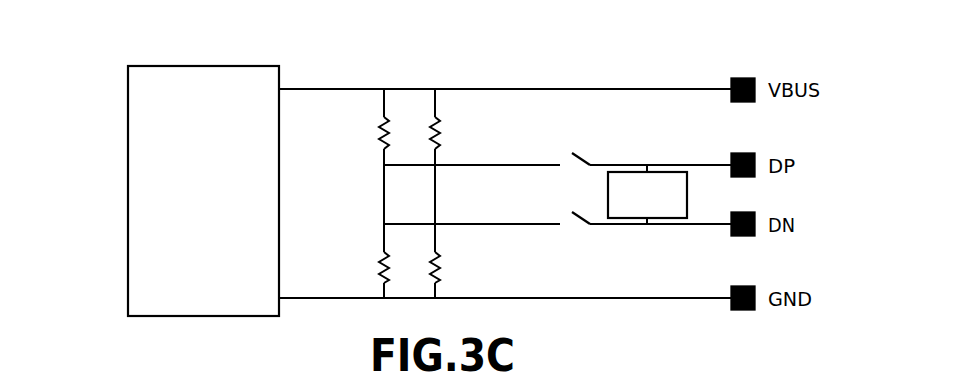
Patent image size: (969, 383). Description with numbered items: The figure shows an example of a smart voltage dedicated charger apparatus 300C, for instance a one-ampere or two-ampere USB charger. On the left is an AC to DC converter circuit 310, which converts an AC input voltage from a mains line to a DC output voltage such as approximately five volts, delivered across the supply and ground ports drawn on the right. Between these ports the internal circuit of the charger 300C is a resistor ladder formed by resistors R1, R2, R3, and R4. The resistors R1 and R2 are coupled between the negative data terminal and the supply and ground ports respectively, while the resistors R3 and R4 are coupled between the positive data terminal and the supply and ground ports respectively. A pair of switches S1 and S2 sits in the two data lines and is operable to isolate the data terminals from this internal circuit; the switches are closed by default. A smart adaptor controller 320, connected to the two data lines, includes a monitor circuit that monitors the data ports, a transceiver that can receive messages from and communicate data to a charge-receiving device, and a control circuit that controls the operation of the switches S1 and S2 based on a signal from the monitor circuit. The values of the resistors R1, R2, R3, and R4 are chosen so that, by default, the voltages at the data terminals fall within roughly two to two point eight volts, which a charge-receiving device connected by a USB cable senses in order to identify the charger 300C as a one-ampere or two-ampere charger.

The voltage dedicated charger apparatus 300C is at (105, 80).
The AC to DC converter circuit 310 is at (186, 234).
The smart adaptor controller (SAC) 320 is at (648, 224).
The resistor R1 is at (454, 133).
The resistor R2 is at (454, 268).
The resistor R3 is at (364, 133).
The resistor R4 is at (364, 268).
The switch S1 is at (580, 146).
The switch S2 is at (580, 236).